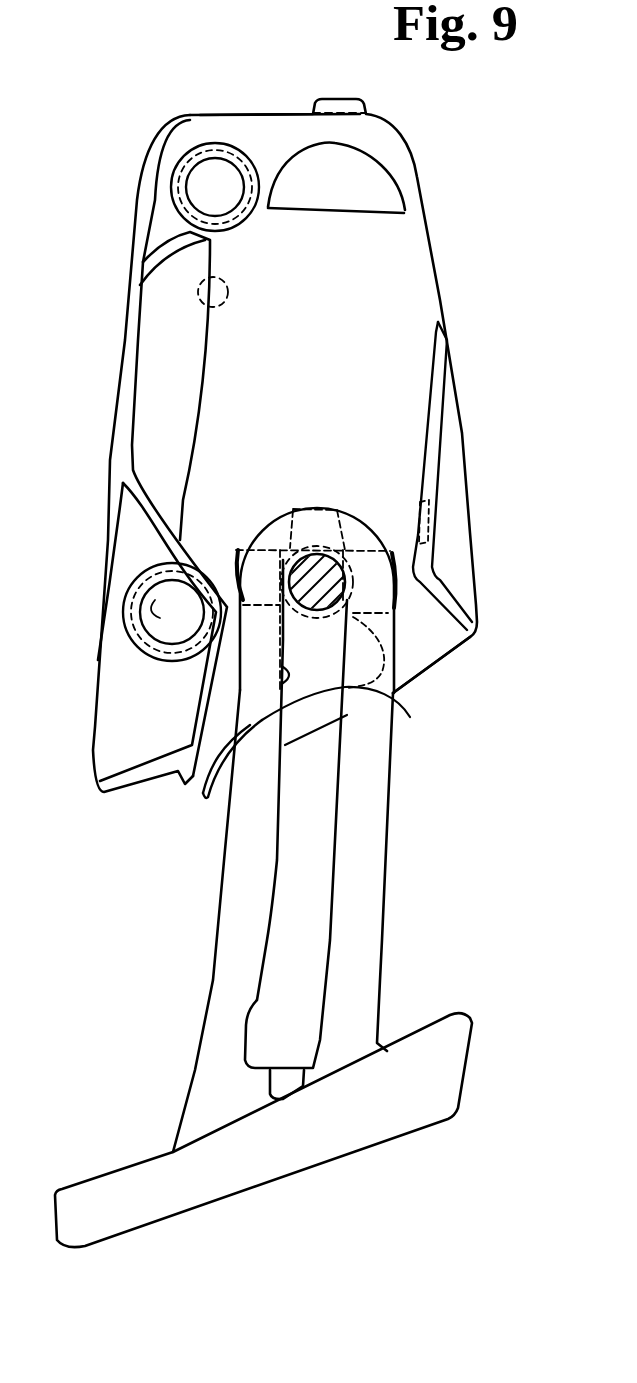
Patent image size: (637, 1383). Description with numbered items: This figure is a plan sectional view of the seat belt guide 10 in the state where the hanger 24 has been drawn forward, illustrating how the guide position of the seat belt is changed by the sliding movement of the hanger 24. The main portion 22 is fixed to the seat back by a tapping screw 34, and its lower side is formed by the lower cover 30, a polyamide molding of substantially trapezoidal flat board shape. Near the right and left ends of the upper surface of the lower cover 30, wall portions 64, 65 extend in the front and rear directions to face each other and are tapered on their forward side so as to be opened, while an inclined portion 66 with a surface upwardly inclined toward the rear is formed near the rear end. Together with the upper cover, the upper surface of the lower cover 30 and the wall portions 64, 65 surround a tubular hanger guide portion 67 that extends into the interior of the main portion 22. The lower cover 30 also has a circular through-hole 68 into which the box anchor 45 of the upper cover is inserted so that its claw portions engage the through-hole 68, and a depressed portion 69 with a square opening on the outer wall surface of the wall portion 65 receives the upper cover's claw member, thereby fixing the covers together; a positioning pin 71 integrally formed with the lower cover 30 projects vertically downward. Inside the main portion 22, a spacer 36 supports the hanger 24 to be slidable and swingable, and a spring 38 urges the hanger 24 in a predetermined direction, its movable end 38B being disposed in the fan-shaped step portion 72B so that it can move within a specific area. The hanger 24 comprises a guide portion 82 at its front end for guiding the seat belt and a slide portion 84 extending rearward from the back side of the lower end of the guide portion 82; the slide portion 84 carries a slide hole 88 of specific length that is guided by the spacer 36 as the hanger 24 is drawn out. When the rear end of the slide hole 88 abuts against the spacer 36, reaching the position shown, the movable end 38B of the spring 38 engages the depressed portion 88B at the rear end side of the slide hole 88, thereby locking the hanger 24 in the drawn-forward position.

The seat belt guide 10 is at (121, 174).
The main portion 22 is at (172, 112).
The hanger 24 is at (367, 1158).
The lower cover 30 is at (263, 128).
The tapping screw 34 is at (353, 533).
The spacer 36 is at (236, 566).
The spring 38 is at (290, 520).
The movable end 38B is at (285, 658).
The box anchor 45 is at (160, 602).
The wall portion 64 is at (192, 734).
The wall portion 65 is at (430, 470).
The inclined portion 66 is at (387, 181).
The hanger guide portion 67 is at (419, 622).
The through-hole 68 is at (148, 620).
The depressed portion 69 is at (430, 512).
The positioning pin 71 is at (200, 288).
The step portion 72B is at (361, 684).
The guide portion 82 is at (462, 1073).
The slide portion 84 is at (373, 887).
The slide hole 88 is at (336, 833).
The depressed portion 88B is at (204, 776).